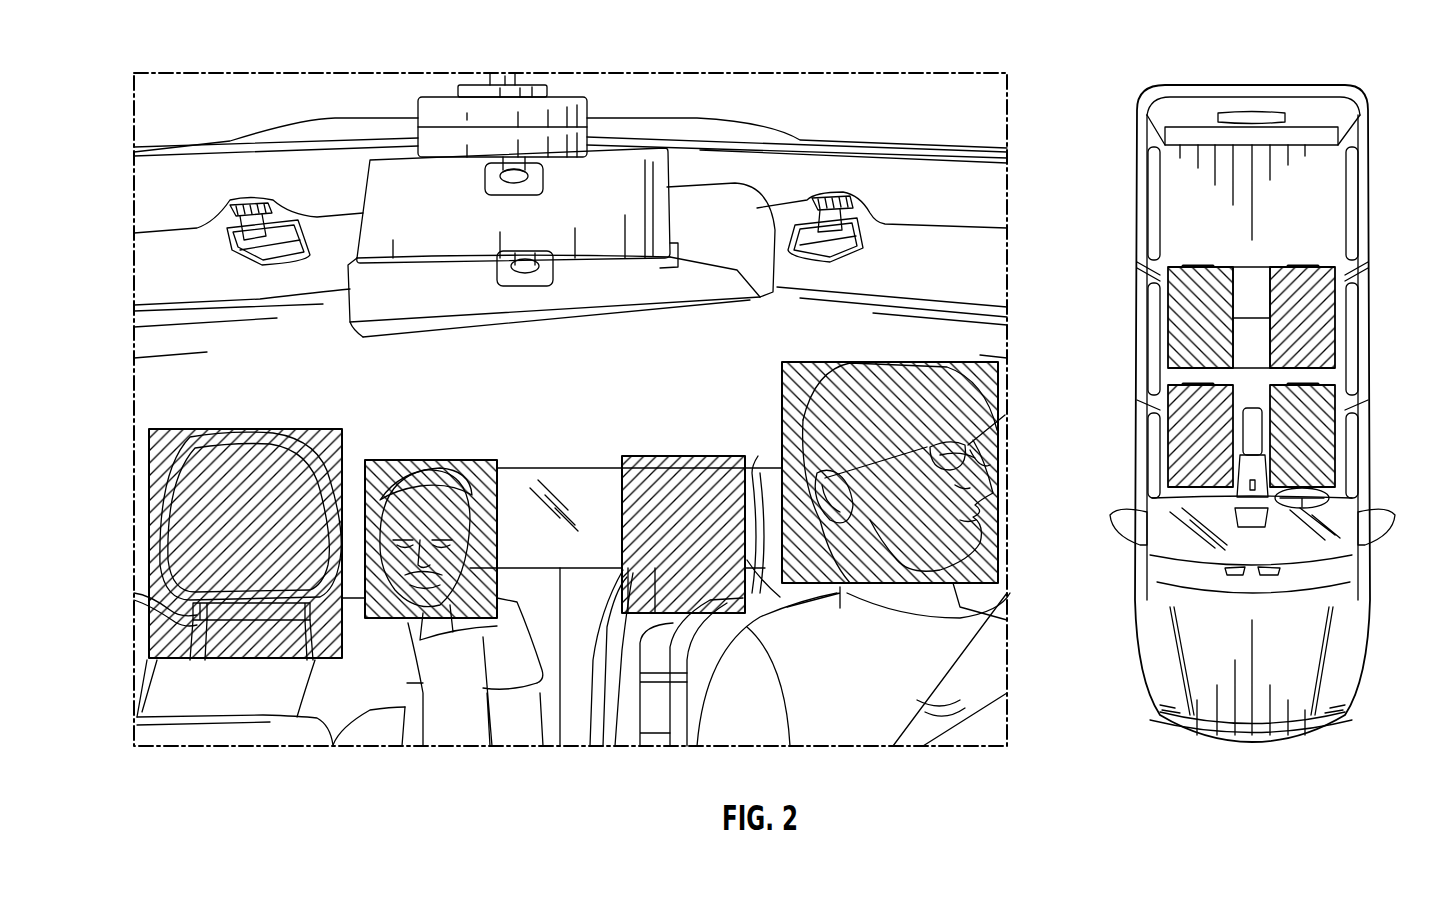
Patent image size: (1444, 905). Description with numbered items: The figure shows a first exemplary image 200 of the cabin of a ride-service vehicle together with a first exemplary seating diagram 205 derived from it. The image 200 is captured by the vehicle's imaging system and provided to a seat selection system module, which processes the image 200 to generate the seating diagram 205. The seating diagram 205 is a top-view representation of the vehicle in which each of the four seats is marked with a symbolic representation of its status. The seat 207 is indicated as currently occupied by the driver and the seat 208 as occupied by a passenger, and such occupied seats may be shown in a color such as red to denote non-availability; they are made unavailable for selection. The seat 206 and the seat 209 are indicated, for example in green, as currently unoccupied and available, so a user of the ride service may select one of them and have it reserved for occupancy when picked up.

The first exemplary image 200 is at (983, 44).
The first exemplary seating diagram 205 is at (1330, 67).
The seat 206 is at (1327, 315).
The seat 207 is at (1323, 462).
The seat 208 is at (1177, 302).
The seat 209 is at (1177, 450).